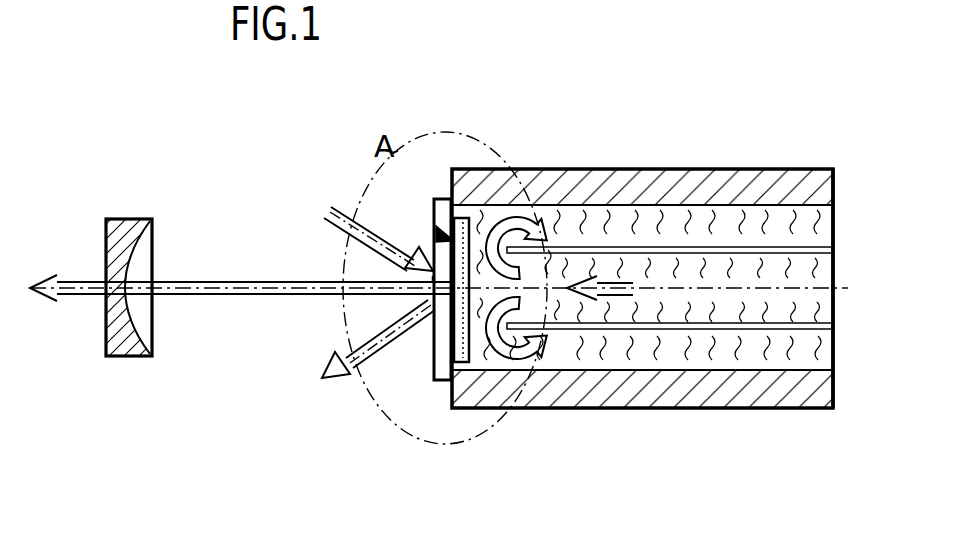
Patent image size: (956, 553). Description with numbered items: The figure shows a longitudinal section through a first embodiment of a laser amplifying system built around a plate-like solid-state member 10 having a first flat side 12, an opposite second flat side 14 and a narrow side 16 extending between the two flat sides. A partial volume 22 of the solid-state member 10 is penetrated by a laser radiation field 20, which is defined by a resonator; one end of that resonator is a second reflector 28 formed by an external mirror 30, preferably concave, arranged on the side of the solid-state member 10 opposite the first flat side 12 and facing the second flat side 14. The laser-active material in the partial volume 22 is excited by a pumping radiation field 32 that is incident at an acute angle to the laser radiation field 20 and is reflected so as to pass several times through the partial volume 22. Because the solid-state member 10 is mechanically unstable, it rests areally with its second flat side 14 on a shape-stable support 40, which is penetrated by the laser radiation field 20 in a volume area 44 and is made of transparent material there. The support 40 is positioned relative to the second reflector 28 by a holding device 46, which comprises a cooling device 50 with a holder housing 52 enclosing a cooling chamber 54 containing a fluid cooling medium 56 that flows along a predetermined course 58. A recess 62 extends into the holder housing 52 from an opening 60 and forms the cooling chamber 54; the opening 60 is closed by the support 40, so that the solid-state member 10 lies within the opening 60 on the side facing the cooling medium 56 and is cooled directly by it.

The solid-state member 10 is at (433, 240).
The first flat side 12 is at (469, 352).
The second flat side 14 is at (443, 337).
The narrow side 16 is at (463, 363).
The laser radiation field 20 is at (212, 263).
The partial volume 22 is at (480, 226).
The second reflector 28 is at (124, 219).
The external mirror 30 is at (147, 333).
The pumping radiation field 32 is at (433, 272).
The support 40 is at (432, 332).
The volume area 44 is at (434, 279).
The holding device 46 is at (645, 150).
The cooling device 50 is at (694, 148).
The holder housing 52 is at (835, 170).
The cooling chamber 54 is at (755, 225).
The fluid cooling medium 56 is at (693, 348).
The predetermined course 58 is at (622, 297).
The opening 60 is at (436, 224).
The recess 62 is at (757, 365).